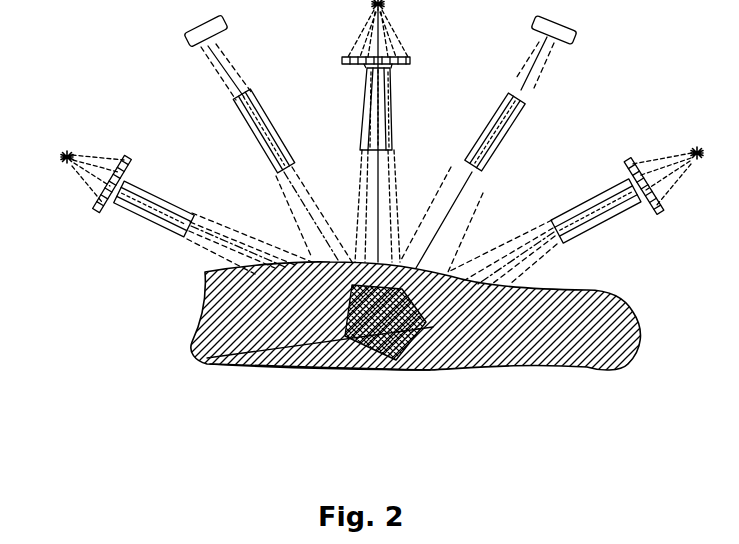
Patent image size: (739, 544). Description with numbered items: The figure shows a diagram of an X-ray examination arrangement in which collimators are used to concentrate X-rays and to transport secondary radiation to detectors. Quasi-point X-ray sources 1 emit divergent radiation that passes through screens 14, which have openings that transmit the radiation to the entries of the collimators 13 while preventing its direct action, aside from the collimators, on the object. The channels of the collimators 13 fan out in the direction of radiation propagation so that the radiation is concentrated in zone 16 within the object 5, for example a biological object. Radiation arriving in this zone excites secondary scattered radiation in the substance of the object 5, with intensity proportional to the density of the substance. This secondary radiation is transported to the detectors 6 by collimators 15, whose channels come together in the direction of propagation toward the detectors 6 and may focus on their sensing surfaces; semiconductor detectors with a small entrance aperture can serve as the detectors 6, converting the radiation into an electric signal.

The X-ray source 1 is at (64, 161).
The object 5 is at (213, 310).
The detector 6 is at (187, 40).
The collimator 13 is at (160, 227).
The screen 14 is at (95, 210).
The collimator 15 is at (246, 117).
The zone 16 is at (200, 365).